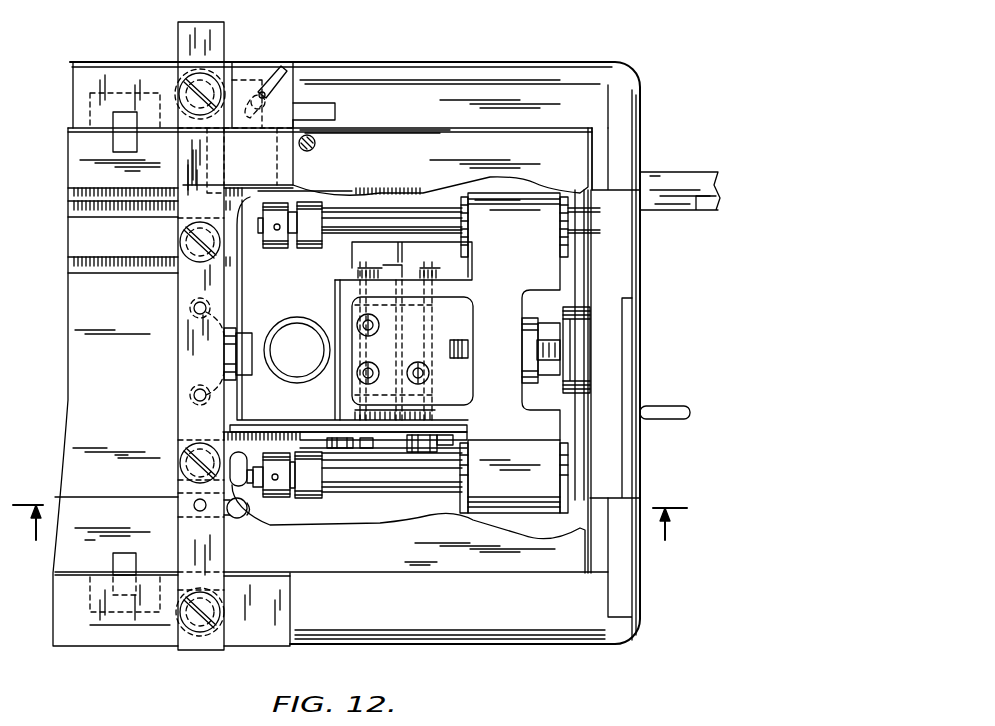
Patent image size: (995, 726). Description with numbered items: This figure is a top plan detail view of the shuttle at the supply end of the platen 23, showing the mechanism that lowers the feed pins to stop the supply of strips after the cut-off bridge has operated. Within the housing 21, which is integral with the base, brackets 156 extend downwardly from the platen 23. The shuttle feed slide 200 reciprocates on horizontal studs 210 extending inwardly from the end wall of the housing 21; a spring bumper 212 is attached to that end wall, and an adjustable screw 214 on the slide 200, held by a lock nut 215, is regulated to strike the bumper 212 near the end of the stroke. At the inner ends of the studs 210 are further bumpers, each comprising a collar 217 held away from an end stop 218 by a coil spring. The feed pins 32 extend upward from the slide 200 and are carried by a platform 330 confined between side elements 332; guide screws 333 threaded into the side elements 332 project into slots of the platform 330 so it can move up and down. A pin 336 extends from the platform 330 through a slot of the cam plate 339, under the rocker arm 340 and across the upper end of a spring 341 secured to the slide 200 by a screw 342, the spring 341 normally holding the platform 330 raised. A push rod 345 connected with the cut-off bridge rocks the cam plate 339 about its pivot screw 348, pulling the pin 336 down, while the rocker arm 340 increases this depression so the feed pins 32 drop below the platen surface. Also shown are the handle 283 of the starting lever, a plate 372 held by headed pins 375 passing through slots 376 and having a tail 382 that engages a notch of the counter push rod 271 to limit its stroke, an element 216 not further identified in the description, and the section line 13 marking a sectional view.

The housing 21 is at (618, 63).
The platen 23 is at (590, 160).
The handle 283 is at (684, 178).
The brackets 156 is at (272, 284).
The shuttle feed slide 200 is at (547, 270).
The horizontal posts or studs 210 is at (380, 212).
The spring bumper 212 is at (583, 342).
The screw 214 is at (575, 357).
The lock nut 215 is at (537, 348).
The lower shaft 216 is at (400, 482).
The collar 217 is at (322, 220).
The end stop 218 is at (292, 206).
The push rod 271 is at (316, 146).
The feed pins 32 is at (417, 370).
The platform 330 is at (428, 335).
The side elements 332 is at (357, 292).
The guide screws 333 is at (364, 272).
The pin 336 is at (395, 448).
The cam plate 339 is at (247, 427).
The rocker arm 340 is at (317, 500).
The spring 341 is at (396, 486).
The screw 342 is at (433, 452).
The push rod 345 is at (240, 517).
The pivot screw 348 is at (353, 450).
The plate 372 is at (238, 80).
The pins 375 is at (262, 85).
The slots 376 is at (280, 78).
The tail 382 is at (326, 103).
The section line 13- 13 is at (350, 536).